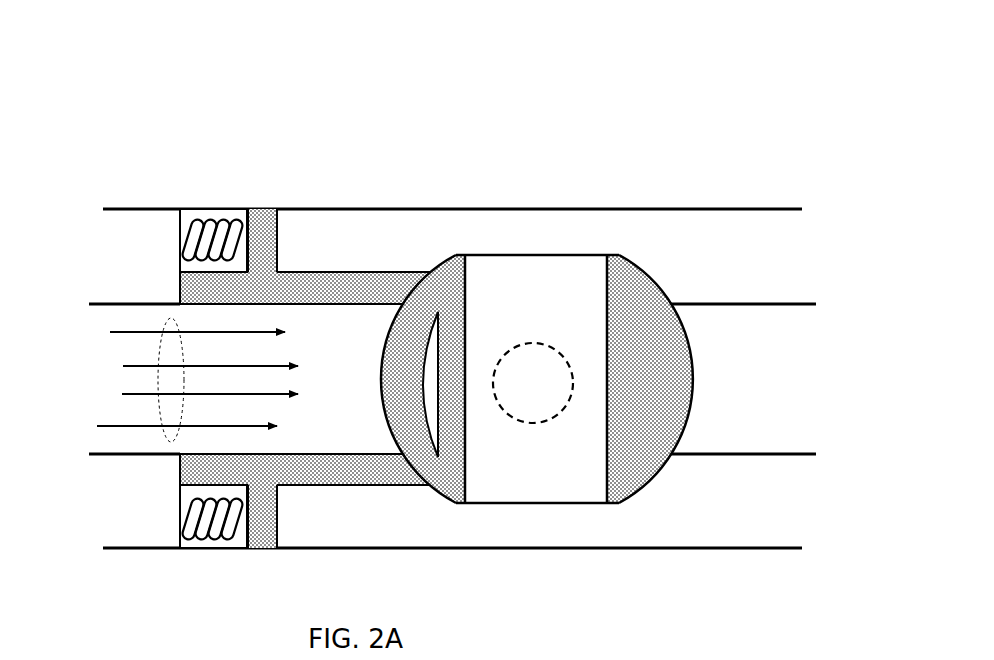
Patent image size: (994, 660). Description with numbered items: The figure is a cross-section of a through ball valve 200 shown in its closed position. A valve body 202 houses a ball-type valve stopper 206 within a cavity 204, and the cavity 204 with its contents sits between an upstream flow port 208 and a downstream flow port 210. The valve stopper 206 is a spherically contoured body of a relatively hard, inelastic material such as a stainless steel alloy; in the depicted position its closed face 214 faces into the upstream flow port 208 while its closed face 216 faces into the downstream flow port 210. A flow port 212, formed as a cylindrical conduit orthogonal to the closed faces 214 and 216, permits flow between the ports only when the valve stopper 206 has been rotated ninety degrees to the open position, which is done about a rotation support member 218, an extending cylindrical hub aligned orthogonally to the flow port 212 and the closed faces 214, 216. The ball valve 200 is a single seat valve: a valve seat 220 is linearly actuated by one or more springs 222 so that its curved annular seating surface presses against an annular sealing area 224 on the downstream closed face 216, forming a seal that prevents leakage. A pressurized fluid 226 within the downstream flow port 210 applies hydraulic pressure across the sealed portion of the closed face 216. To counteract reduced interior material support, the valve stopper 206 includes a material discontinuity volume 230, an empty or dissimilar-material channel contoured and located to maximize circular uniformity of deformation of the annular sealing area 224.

The ball valve 200 is at (435, 315).
The valve body 202 is at (549, 383).
The cavity 204 is at (653, 223).
The valve stopper 206 is at (688, 278).
The upstream flow port 208 is at (728, 303).
The downstream flow port 210 is at (127, 303).
The flow port 212 is at (538, 480).
The closed face 214 is at (692, 367).
The closed face 216 is at (382, 350).
The rotation support member 218 is at (518, 420).
The valve seat 220 is at (293, 282).
The springs 222 is at (211, 226).
The annular sealing area 224 is at (407, 296).
The fluid 226 is at (165, 322).
The material discontinuity volume 230 is at (430, 390).